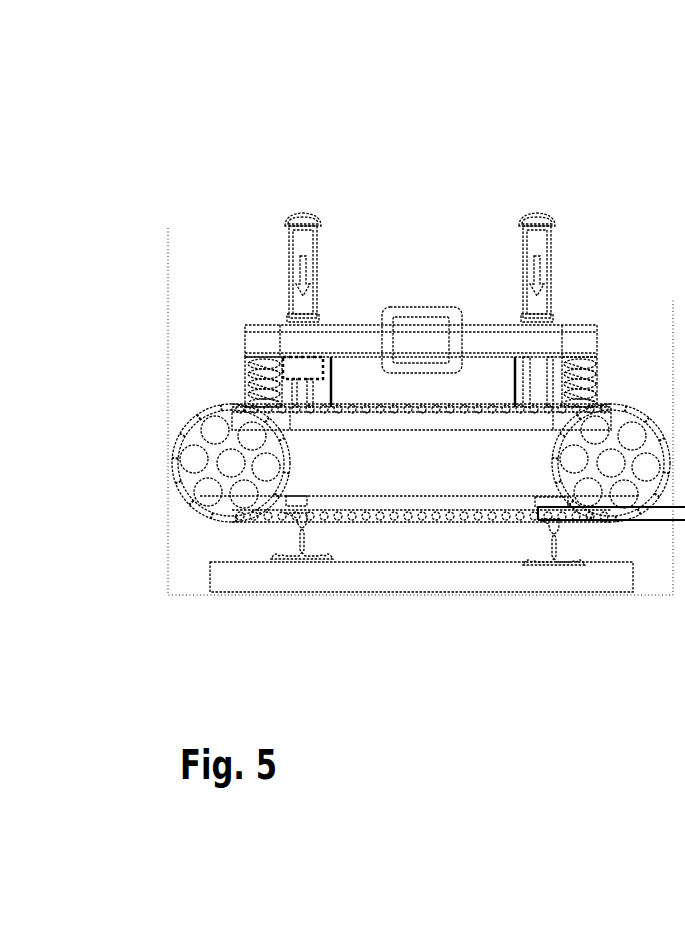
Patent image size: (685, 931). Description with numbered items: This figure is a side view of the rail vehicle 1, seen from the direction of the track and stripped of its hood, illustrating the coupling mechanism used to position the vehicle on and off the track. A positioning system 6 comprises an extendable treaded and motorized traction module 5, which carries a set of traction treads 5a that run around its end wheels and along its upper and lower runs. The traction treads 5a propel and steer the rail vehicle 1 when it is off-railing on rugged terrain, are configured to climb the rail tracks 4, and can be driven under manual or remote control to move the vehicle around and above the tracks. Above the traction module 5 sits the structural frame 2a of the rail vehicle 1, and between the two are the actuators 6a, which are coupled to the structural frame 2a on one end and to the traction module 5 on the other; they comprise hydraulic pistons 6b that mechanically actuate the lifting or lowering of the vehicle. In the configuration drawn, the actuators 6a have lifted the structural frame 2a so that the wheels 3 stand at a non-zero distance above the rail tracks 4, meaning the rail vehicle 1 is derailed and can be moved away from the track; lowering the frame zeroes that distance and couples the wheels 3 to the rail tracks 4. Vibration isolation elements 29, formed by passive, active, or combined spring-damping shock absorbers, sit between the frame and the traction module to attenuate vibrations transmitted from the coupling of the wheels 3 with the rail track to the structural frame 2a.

The rail vehicle 1 is at (340, 124).
The structural frame 2a is at (483, 326).
The wheels 3 is at (536, 503).
The rail tracks 4 is at (545, 528).
The extendable treaded and motorized traction module 5 is at (421, 462).
The traction treads 5a is at (206, 510).
The positioning system 6 is at (297, 366).
The actuators 6a is at (297, 215).
The hydraulic pistons 6b is at (262, 372).
The vibration isolation elements 29 is at (264, 381).